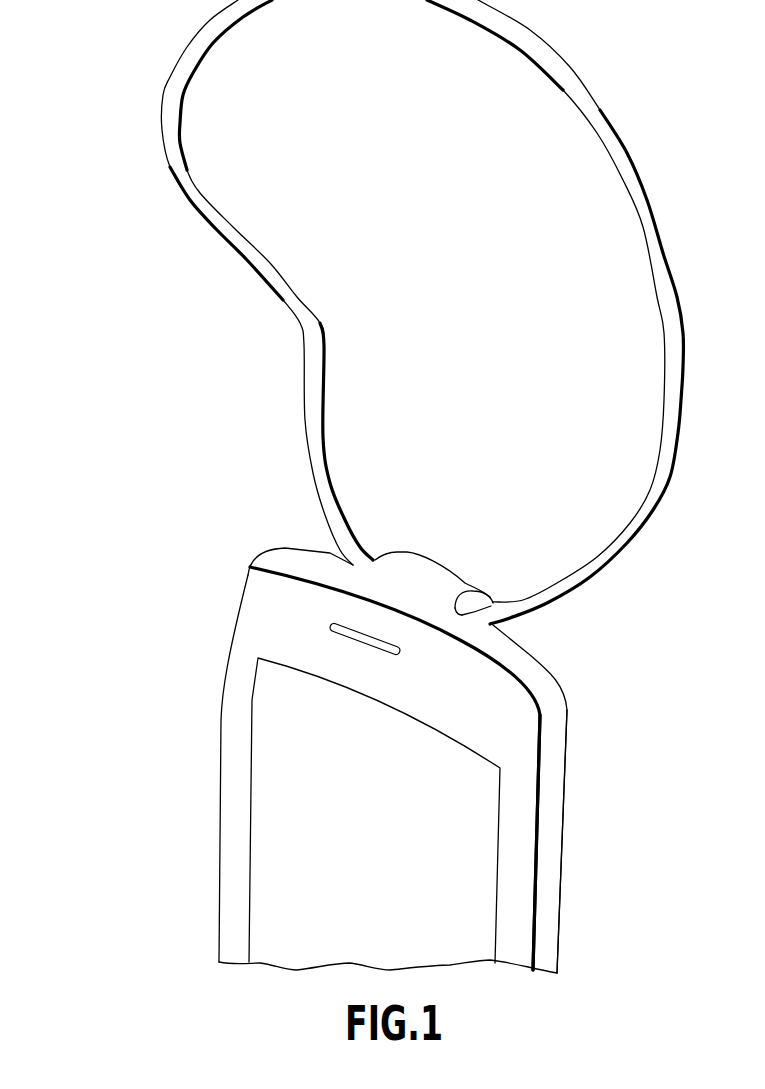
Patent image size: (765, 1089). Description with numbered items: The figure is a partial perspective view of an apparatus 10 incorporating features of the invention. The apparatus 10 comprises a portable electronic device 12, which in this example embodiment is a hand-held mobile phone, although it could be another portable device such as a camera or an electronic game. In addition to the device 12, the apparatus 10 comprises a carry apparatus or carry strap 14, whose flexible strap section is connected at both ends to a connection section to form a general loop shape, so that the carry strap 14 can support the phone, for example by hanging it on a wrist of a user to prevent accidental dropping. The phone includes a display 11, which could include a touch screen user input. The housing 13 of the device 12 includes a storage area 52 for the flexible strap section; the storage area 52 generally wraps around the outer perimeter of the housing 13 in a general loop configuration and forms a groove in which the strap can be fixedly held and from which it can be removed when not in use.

The apparatus 10 is at (114, 271).
The display 11 is at (272, 955).
The portable electronic device 12 is at (567, 757).
The housing 13 is at (220, 770).
The carry strap 14 is at (569, 66).
The storage area 52 is at (553, 870).